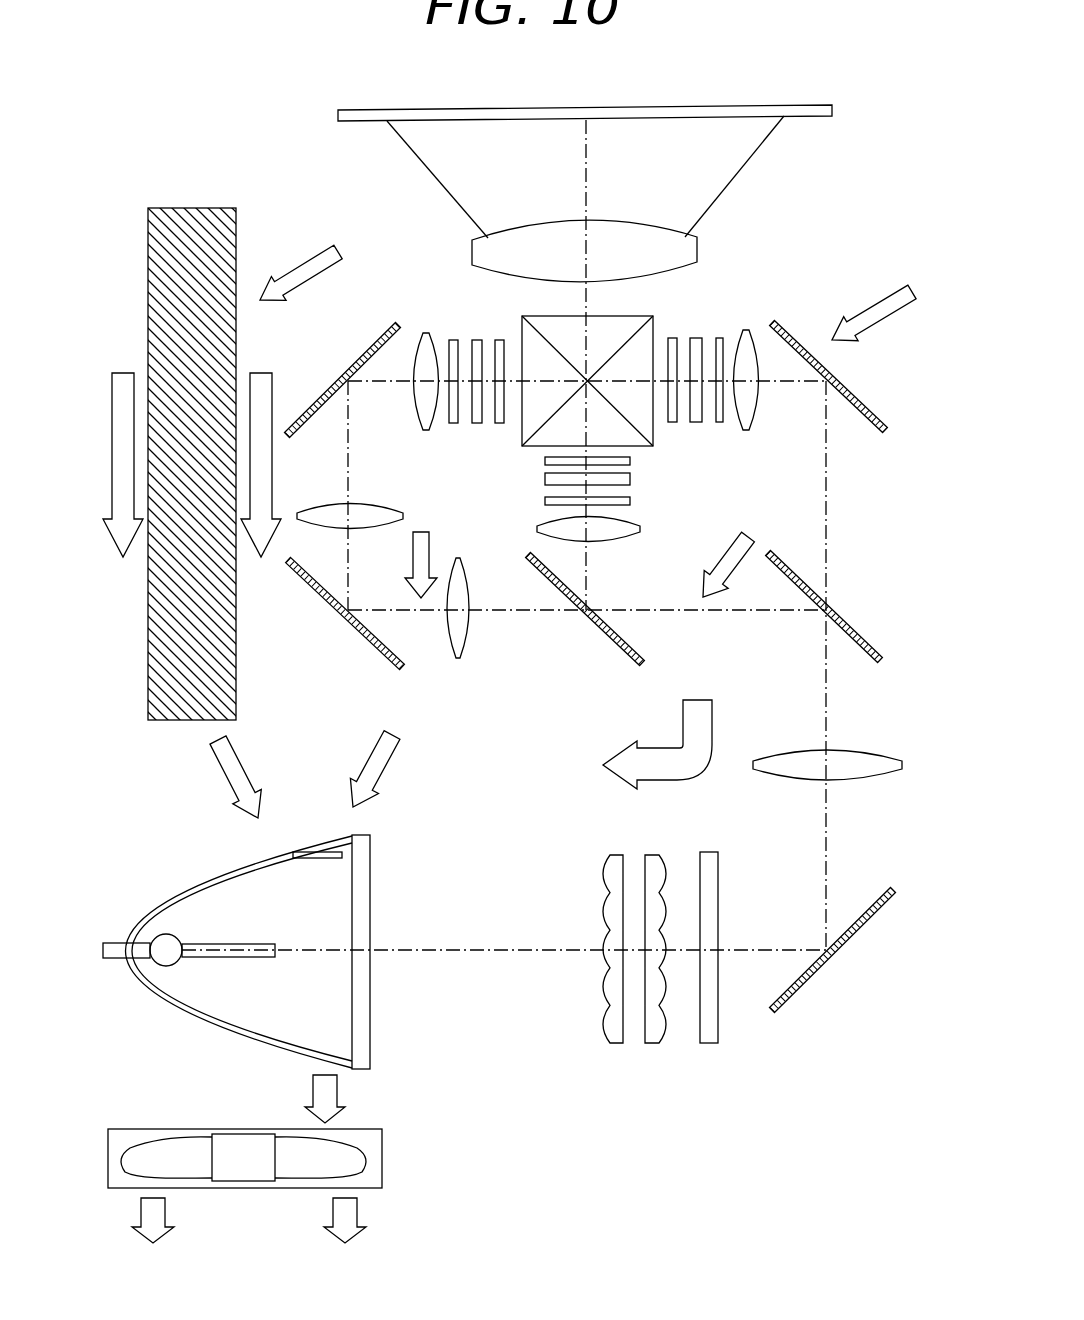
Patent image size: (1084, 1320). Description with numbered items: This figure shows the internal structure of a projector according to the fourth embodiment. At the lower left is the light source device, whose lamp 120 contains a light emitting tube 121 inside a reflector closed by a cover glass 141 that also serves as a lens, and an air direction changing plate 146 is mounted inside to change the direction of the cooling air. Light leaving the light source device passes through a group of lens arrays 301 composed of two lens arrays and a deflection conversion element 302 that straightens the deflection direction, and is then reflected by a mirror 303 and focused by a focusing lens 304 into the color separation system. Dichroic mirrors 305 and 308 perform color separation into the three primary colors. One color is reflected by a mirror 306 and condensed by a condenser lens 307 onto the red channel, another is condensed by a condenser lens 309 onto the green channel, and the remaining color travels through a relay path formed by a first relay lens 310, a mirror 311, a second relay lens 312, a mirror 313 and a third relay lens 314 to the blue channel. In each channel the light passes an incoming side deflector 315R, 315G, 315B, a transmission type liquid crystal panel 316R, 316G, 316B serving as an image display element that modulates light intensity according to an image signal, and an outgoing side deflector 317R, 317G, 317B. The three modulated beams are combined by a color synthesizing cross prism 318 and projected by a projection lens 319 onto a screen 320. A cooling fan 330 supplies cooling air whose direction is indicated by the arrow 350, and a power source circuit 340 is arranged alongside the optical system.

The screen 320 is at (795, 116).
The projection lens 319 is at (477, 250).
The color synthesizing cross prism 318 is at (528, 352).
The outgoing side deflector 317R is at (675, 338).
The outgoing side deflector 317G is at (630, 461).
The outgoing side deflector 317B is at (498, 424).
The transmission type liquid crystal panel 316R is at (700, 407).
The transmission type liquid crystal panel 316G is at (547, 480).
The transmission type liquid crystal panel 316B is at (477, 338).
The incoming side deflector 315R is at (722, 338).
The incoming side deflector 315G is at (630, 500).
The incoming side deflector 315B is at (453, 424).
The third relay lens 314 is at (427, 402).
The mirror 313 is at (312, 408).
The second relay lens 312 is at (335, 512).
The mirror 311 is at (355, 625).
The first relay lens 310 is at (460, 645).
The condenser lens 309 is at (622, 540).
The dichroic mirror 308 is at (605, 640).
The condenser lens 307 is at (750, 390).
The mirror 306 is at (843, 373).
The dichroic mirror 305 is at (852, 615).
The focusing lens 304 is at (865, 768).
The mirror 303 is at (817, 970).
The deflection conversion element 302 is at (710, 1042).
The group of lens arrays 301 is at (677, 1048).
The cover glass also serving as a lens 141 is at (370, 1022).
The air direction changing plate 146 is at (322, 857).
The light emitting tube 121 is at (162, 962).
The lamp 120 is at (250, 960).
The power source circuit 340 is at (185, 710).
The cooling fan 330 is at (363, 1158).
The direction of cooling air 350 is at (895, 290).